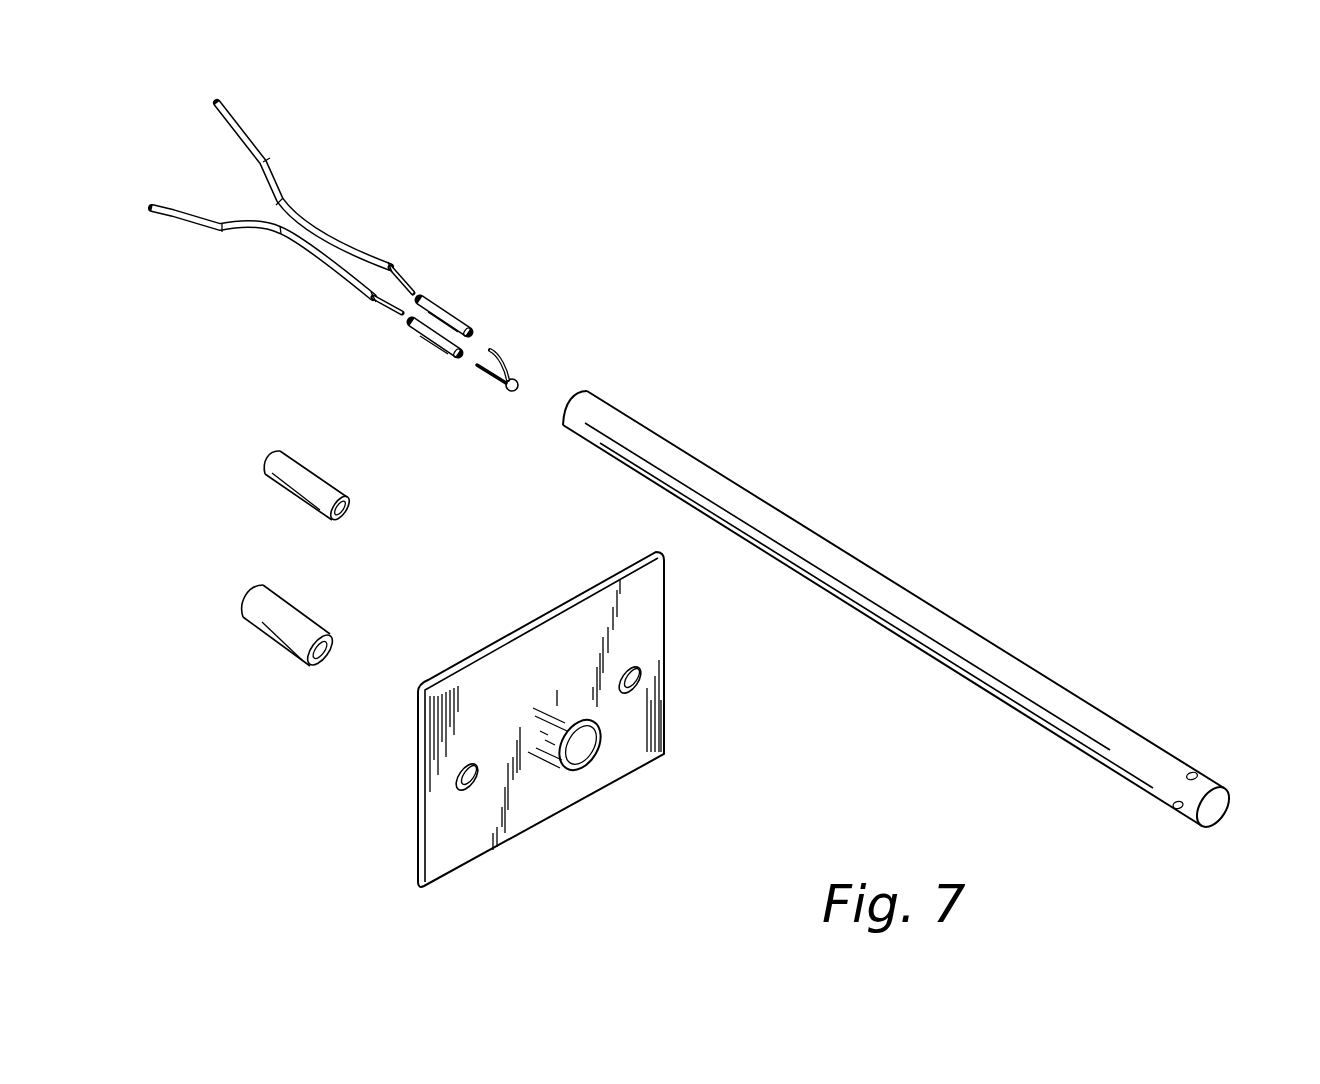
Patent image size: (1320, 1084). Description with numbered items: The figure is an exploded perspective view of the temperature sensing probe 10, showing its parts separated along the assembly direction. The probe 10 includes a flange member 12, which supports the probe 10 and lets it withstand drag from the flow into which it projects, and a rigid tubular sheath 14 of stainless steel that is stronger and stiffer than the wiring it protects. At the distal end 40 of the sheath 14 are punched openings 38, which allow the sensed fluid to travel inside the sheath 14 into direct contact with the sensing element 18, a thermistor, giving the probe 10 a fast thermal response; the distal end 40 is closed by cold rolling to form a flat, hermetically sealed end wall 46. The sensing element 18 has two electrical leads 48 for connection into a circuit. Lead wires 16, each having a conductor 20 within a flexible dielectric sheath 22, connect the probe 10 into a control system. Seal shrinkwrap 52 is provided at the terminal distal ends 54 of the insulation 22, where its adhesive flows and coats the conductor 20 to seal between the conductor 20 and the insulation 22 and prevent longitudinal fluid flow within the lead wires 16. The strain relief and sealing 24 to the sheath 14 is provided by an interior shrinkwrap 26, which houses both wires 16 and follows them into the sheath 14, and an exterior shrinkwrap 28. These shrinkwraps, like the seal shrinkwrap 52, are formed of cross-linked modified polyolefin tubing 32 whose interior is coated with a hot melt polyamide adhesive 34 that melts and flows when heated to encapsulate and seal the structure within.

The probe 10 is at (817, 486).
The flange member 12 is at (640, 597).
The sheath 14 is at (903, 590).
The lead wires 16 is at (277, 175).
The sensing element 18 is at (519, 386).
The conductor 20 is at (240, 115).
The dielectric sheath 22 is at (292, 208).
The strain relief/sealing 24 is at (289, 683).
The interior shrinkwrap 26 is at (307, 482).
The exterior shrinkwrap 28 is at (280, 620).
The tubing 32 is at (432, 306).
The adhesive 34 is at (343, 511).
The openings 38 is at (1196, 772).
The distal end 40 is at (1133, 752).
The end wall 46 is at (1216, 814).
The electrical leads 48 is at (504, 366).
The seal shrinkwrap 52 is at (454, 318).
The terminal distal ends 54 is at (396, 265).